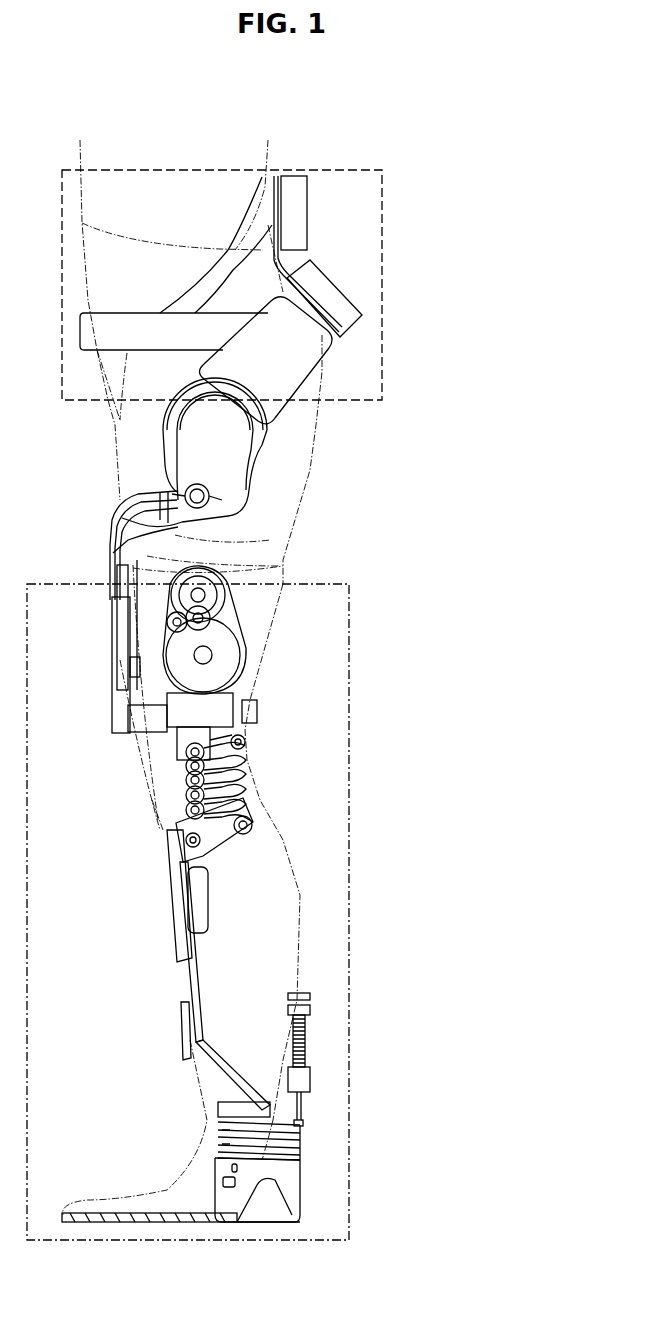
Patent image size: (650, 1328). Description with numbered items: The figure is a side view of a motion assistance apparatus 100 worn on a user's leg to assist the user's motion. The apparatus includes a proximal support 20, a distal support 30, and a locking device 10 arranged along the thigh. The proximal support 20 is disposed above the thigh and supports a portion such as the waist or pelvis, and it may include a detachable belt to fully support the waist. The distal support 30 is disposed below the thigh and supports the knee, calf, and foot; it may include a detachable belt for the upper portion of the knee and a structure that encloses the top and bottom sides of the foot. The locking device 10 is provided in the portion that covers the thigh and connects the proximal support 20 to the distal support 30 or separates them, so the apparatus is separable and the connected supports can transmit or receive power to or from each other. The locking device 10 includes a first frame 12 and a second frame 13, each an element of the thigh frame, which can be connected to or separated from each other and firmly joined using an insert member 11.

The motion assistance apparatus 100 is at (201, 97).
The proximal support 20 is at (384, 282).
The locking device 10 is at (363, 417).
The first frame 12 is at (213, 431).
The insert member 11 is at (212, 497).
The second frame 13 is at (150, 527).
The distal support 30 is at (352, 910).